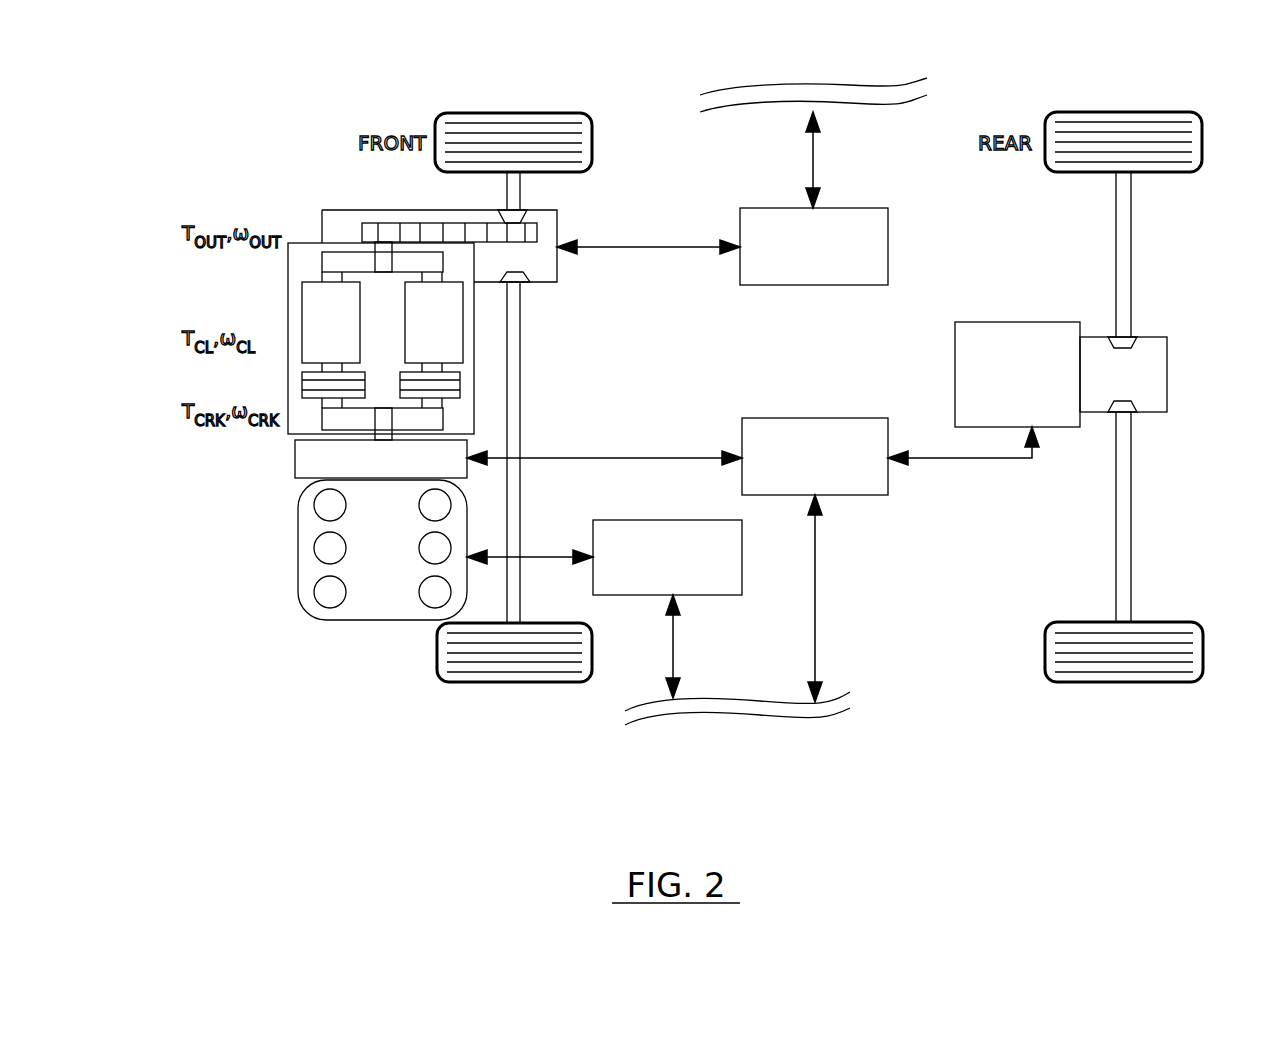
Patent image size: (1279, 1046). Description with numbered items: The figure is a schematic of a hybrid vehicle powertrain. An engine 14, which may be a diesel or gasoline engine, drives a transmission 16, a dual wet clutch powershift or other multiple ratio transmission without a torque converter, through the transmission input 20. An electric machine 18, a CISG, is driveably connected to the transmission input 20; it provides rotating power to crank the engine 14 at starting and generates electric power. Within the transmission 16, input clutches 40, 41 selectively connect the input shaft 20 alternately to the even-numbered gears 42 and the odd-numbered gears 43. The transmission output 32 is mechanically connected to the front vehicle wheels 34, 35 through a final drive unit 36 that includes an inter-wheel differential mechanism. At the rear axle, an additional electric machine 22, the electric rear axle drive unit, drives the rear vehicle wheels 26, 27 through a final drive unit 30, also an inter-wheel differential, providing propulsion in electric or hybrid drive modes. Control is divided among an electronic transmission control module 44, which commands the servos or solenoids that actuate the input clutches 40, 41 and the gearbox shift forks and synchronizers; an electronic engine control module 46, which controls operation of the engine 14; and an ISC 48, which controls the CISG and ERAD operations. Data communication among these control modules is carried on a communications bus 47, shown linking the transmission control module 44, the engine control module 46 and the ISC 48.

The engine 14 is at (390, 620).
The transmission 16 is at (288, 295).
The electric machine 18 is at (295, 452).
The transmission input 20 is at (385, 424).
The electric machine 22 is at (1022, 321).
The vehicle wheel 26 is at (1167, 111).
The vehicle wheel 27 is at (1165, 682).
The final drive unit 30 is at (1167, 366).
The transmission output 32 is at (382, 258).
The vehicle wheel 34 is at (487, 112).
The vehicle wheel 35 is at (497, 682).
The final drive unit 36 is at (557, 232).
The input clutch 40 is at (462, 383).
The input clutch 41 is at (302, 385).
The even-numbered gears 42 is at (463, 302).
The odd-numbered gears 43 is at (318, 283).
The transmission control module 44 is at (870, 209).
The engine control module 46 is at (720, 596).
The communications bus 47 is at (837, 95).
The ISC 48 is at (870, 496).